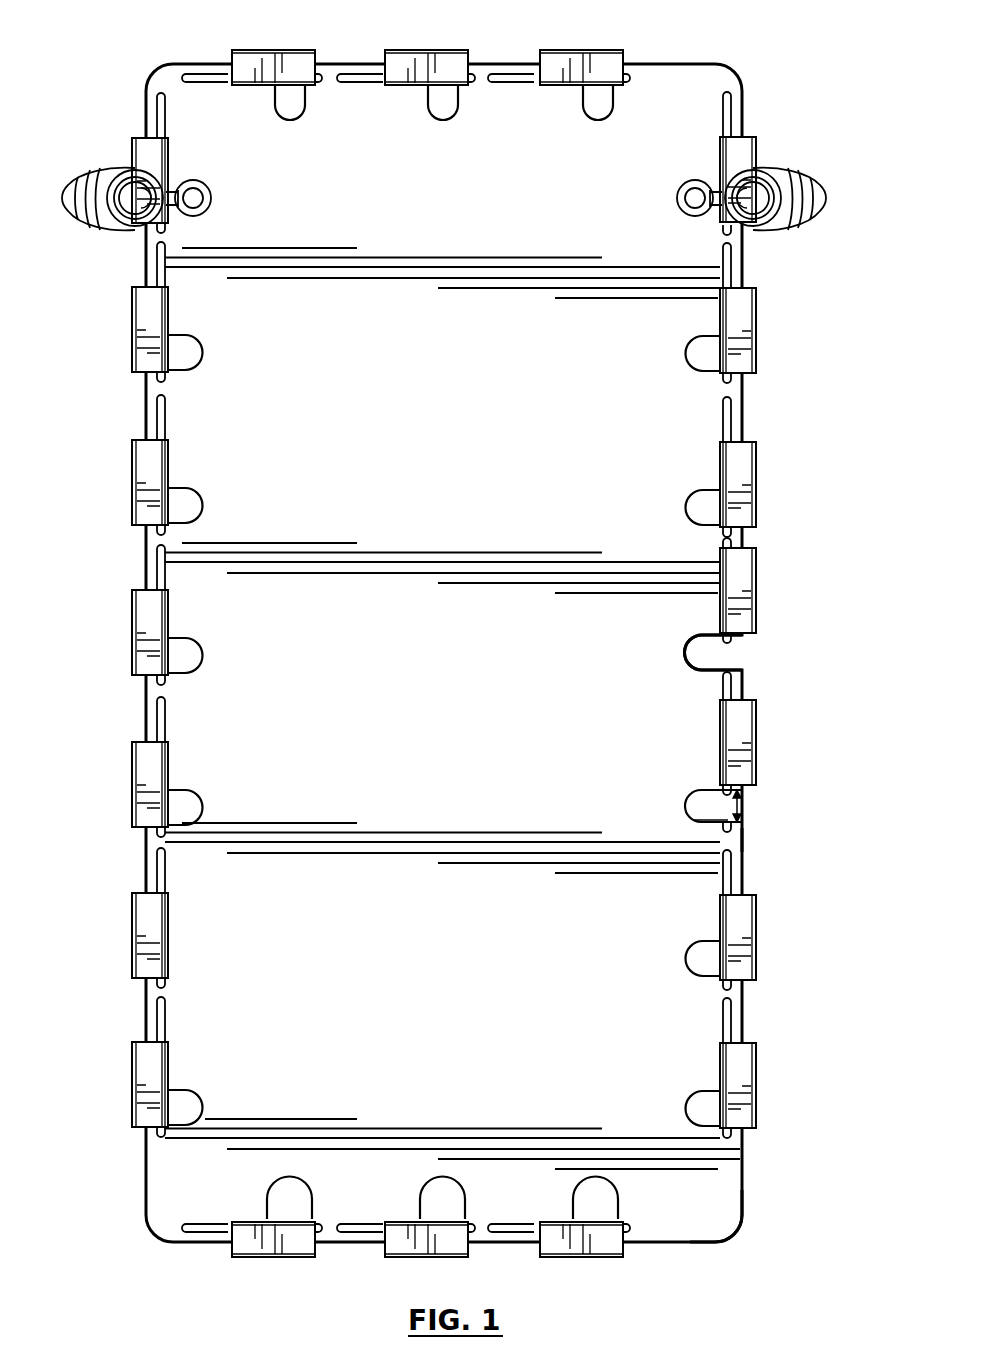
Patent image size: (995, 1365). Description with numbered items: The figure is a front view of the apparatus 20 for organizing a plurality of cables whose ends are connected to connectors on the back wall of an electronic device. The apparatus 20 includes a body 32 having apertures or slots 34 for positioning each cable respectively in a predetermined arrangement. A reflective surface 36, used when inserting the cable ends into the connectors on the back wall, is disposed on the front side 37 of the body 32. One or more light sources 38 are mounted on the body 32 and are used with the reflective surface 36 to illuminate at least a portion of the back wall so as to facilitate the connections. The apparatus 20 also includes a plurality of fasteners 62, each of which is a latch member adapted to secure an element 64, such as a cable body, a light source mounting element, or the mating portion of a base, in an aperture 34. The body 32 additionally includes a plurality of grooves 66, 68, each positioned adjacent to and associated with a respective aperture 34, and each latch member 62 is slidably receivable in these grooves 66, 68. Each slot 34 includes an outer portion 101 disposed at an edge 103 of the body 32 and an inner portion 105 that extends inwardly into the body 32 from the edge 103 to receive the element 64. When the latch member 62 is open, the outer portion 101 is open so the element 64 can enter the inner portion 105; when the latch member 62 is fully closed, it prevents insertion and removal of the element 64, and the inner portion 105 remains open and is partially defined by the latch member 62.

The apparatus 20 is at (459, 631).
The body 32 is at (757, 400).
The aperture or slot 34 is at (738, 653).
The reflective surface 36 is at (519, 1041).
The front side 37 is at (728, 1192).
The light source 38 is at (92, 157).
The fastener 62 is at (132, 1060).
The element 64 is at (712, 220).
The groove 66 is at (160, 417).
The groove 68 is at (160, 527).
The outer portion 101 is at (745, 803).
The edge 103 is at (745, 838).
The inner portion 105 is at (195, 660).